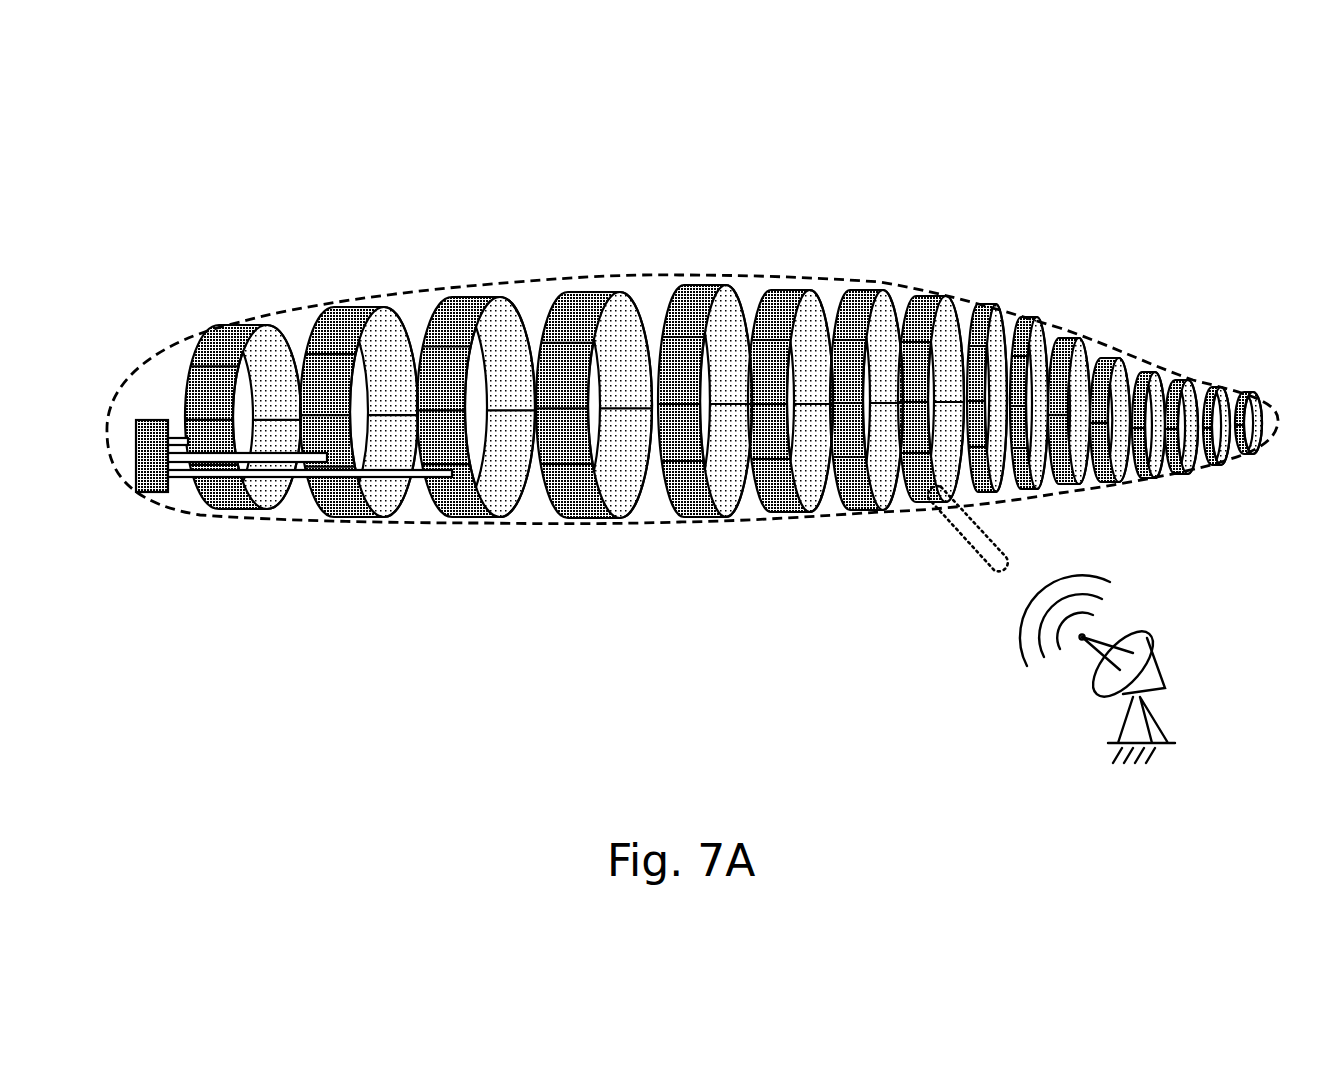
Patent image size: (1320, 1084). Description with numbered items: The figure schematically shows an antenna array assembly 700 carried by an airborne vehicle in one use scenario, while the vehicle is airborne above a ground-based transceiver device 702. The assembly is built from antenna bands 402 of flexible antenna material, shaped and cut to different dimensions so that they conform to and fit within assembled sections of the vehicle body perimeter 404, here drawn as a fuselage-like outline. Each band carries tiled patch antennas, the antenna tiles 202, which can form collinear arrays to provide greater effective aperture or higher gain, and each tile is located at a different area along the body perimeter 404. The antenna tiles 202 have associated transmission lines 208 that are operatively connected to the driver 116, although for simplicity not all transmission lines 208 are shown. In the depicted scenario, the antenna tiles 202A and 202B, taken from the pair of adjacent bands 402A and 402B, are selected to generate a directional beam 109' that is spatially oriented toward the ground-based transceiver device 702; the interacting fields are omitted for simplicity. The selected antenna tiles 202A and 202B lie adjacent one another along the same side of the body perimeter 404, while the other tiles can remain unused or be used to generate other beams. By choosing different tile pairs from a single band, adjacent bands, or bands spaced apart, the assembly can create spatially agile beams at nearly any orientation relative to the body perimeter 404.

The antenna array assembly 700 is at (692, 362).
The vehicle body perimeter 404 is at (318, 304).
The antenna bands 402 is at (583, 313).
The antenna tiles 202 is at (790, 312).
The band 402A is at (842, 400).
The band 402B is at (1006, 369).
The antenna tile 202A is at (857, 487).
The antenna tile 202B is at (942, 496).
The driver 116 is at (152, 492).
The transmission lines 208 is at (388, 478).
The directional beam 109' is at (954, 550).
The ground-based transceiver device 702 is at (1157, 660).